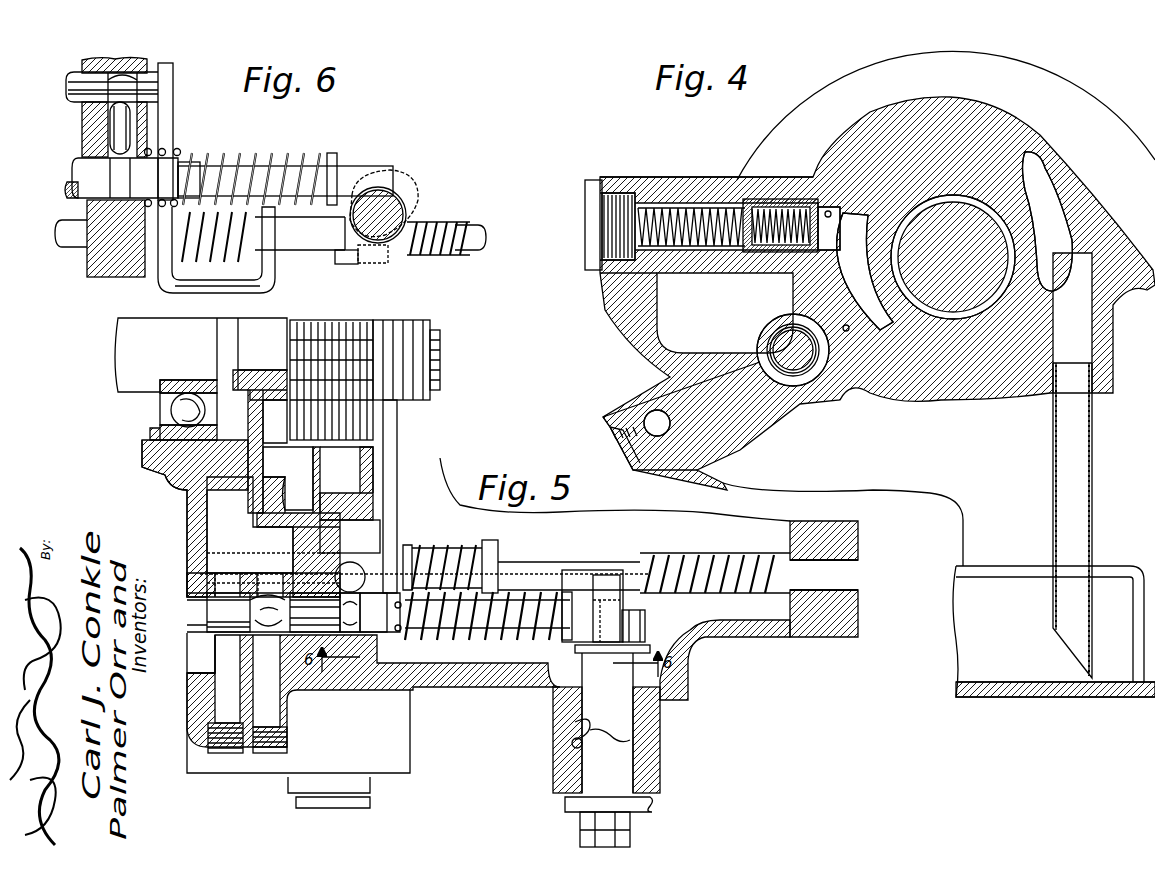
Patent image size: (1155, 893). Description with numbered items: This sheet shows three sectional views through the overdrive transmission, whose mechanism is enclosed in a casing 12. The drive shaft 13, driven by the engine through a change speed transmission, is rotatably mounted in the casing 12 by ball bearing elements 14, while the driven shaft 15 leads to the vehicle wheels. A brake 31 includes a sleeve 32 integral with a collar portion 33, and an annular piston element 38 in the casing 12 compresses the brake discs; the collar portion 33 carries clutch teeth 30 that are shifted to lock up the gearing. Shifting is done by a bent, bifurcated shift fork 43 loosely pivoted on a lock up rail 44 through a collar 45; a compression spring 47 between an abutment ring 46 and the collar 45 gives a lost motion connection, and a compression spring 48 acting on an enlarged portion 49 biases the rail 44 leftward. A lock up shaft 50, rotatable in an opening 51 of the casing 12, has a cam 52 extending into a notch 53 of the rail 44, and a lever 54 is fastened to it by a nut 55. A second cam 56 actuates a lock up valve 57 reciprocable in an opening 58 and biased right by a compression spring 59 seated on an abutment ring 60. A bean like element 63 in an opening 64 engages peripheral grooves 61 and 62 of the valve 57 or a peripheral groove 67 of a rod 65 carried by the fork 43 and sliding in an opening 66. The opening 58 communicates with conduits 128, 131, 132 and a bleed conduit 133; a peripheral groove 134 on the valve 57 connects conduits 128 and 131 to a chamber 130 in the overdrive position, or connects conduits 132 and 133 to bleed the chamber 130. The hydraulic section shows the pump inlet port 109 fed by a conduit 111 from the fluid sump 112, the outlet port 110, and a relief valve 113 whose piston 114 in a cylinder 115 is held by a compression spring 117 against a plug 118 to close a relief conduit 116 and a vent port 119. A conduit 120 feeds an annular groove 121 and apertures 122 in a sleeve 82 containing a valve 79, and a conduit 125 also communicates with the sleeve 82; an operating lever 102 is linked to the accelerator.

In FIG. 4, the casing 12 is at (1108, 112).
In FIG. 5, the casing 12 is at (170, 468).
In FIG. 5, the drive shaft 13 is at (118, 338).
In FIG. 5, the ball bearing elements 14 is at (176, 411).
In FIG. 4, the driven shaft 15 is at (953, 257).
In FIG. 5, the clutch teeth 30 is at (441, 362).
In FIG. 5, the brake 31 is at (378, 462).
In FIG. 5, the sleeve 32 is at (334, 320).
In FIG. 5, the collar portion 33 is at (385, 320).
In FIG. 5, the annular piston element 38 is at (288, 455).
In FIG. 6, the shift fork 43 is at (174, 80).
In FIG. 5, the shift fork 43 is at (398, 473).
In FIG. 6, the lock up rail 44 is at (62, 231).
In FIG. 5, the lock up rail 44 is at (563, 545).
In FIG. 6, the collar 45 is at (276, 269).
In FIG. 5, the collar 45 is at (498, 541).
In FIG. 6, the abutment ring 46 is at (186, 294).
In FIG. 5, the abutment ring 46 is at (412, 547).
In FIG. 6, the compression spring 47 is at (255, 285).
In FIG. 5, the compression spring 47 is at (450, 547).
In FIG. 6, the compression spring 48 is at (462, 255).
In FIG. 5, the compression spring 48 is at (730, 556).
In FIG. 6, the enlarged portion 49 is at (438, 222).
In FIG. 5, the enlarged portion 49 is at (650, 555).
In FIG. 6, the lock up shaft 50 is at (376, 190).
In FIG. 5, the lock up shaft 50 is at (628, 730).
In FIG. 5, the opening 51 is at (575, 723).
In FIG. 6, the cam 52 is at (372, 262).
In FIG. 5, the cam 52 is at (606, 575).
In FIG. 6, the notch 53 is at (346, 264).
In FIG. 5, the notch 53 is at (575, 570).
In FIG. 5, the lever 54 is at (653, 808).
In FIG. 5, the nut 55 is at (580, 830).
In FIG. 6, the second cam 56 is at (405, 182).
In FIG. 5, the second cam 56 is at (648, 620).
In FIG. 6, the lock up valve 57 is at (230, 156).
In FIG. 5, the lock up valve 57 is at (207, 603).
In FIG. 6, the opening 58 is at (70, 190).
In FIG. 5, the opening 58 is at (195, 626).
In FIG. 6, the compression spring 59 is at (283, 153).
In FIG. 5, the compression spring 59 is at (468, 642).
In FIG. 6, the abutment ring 60 is at (332, 153).
In FIG. 5, the abutment ring 60 is at (568, 642).
In FIG. 6, the peripheral groove 61 is at (90, 166).
In FIG. 5, the peripheral groove 61 is at (350, 633).
In FIG. 6, the peripheral groove 62 is at (178, 150).
In FIG. 5, the peripheral groove 62 is at (392, 633).
In FIG. 6, the bean like element 63 is at (135, 120).
In FIG. 5, the bean like element 63 is at (342, 600).
In FIG. 6, the opening 64 is at (85, 127).
In FIG. 6, the rod 65 is at (68, 96).
In FIG. 5, the rod 65 is at (375, 535).
In FIG. 6, the opening 66 is at (68, 78).
In FIG. 6, the peripheral groove 67 is at (130, 57).
In FIG. 4, the valve 79 is at (778, 335).
In FIG. 4, the sleeve 82 is at (792, 370).
In FIG. 5, the operating lever 102 is at (372, 808).
In FIG. 4, the inlet port 109 is at (1046, 202).
In FIG. 4, the outlet port 110 is at (872, 237).
In FIG. 4, the conduit 111 is at (1097, 485).
In FIG. 4, the fluid sump 112 is at (1014, 655).
In FIG. 4, the relief valve 113 is at (620, 177).
In FIG. 4, the piston 114 is at (800, 200).
In FIG. 4, the cylinder 115 is at (712, 203).
In FIG. 4, the relief conduit 116 is at (836, 200).
In FIG. 4, the compression spring 117 is at (691, 250).
In FIG. 4, the plug 118 is at (586, 222).
In FIG. 4, the vent port 119 is at (777, 199).
In FIG. 4, the conduit 120 is at (848, 336).
In FIG. 4, the annular groove 121 is at (812, 367).
In FIG. 4, the apertures 122 is at (770, 360).
In FIG. 4, the conduit 125 is at (703, 421).
In FIG. 5, the conduit 128 is at (268, 632).
In FIG. 5, the chamber 130 is at (238, 499).
In FIG. 5, the conduit 131 is at (268, 575).
In FIG. 5, the conduit 132 is at (228, 575).
In FIG. 5, the bleed conduit 133 is at (192, 647).
In FIG. 5, the peripheral groove 134 is at (234, 667).